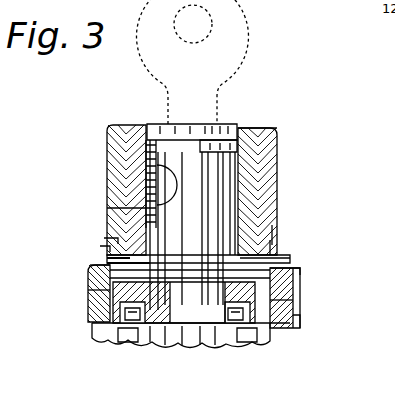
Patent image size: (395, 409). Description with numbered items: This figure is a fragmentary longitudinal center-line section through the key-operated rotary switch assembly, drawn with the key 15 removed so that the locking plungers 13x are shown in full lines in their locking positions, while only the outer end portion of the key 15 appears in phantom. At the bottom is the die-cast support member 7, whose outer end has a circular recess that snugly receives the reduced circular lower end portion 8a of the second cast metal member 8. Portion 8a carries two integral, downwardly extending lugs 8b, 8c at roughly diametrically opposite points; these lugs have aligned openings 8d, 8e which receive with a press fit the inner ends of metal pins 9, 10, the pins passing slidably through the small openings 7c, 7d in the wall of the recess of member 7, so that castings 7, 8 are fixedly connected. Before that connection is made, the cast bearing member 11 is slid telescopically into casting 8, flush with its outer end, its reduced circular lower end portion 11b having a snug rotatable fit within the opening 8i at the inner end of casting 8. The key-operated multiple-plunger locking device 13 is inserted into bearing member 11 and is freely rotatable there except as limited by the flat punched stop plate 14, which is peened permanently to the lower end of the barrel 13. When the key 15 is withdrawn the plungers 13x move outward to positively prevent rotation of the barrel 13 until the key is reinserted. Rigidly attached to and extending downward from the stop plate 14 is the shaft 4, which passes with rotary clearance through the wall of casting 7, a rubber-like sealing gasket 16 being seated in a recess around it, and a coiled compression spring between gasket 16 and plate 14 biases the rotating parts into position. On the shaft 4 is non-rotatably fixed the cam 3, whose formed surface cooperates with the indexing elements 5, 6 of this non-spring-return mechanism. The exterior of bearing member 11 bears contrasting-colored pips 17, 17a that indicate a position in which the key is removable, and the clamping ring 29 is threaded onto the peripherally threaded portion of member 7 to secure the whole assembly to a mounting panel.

The cam 3 is at (228, 340).
The shaft 4 is at (188, 322).
The indexing element 5 is at (148, 332).
The indexing element 6 is at (260, 340).
The support member 7 is at (96, 300).
The opening 7c is at (290, 270).
The opening 7d is at (90, 268).
The cast metal member 8 is at (263, 172).
The reduced circular lower end portion 8a is at (277, 242).
The lug 8b is at (110, 246).
The lug 8c is at (293, 285).
The opening 8d is at (110, 240).
The opening 8e is at (295, 300).
The opening 8i is at (272, 226).
The metal pin 9 is at (283, 258).
The metal pin 10 is at (105, 258).
The bearing member 11 is at (278, 132).
The reduced circular lower end portion 11b is at (112, 208).
The locking device 13 is at (210, 130).
The locking plunger 13x is at (177, 185).
The stop plate 14 is at (192, 225).
The key 15 is at (241, 52).
The sealing gasket 16 is at (90, 290).
The raised portion 17 is at (248, 128).
The raised portion 17a is at (138, 125).
The clamping ring 29 is at (300, 322).